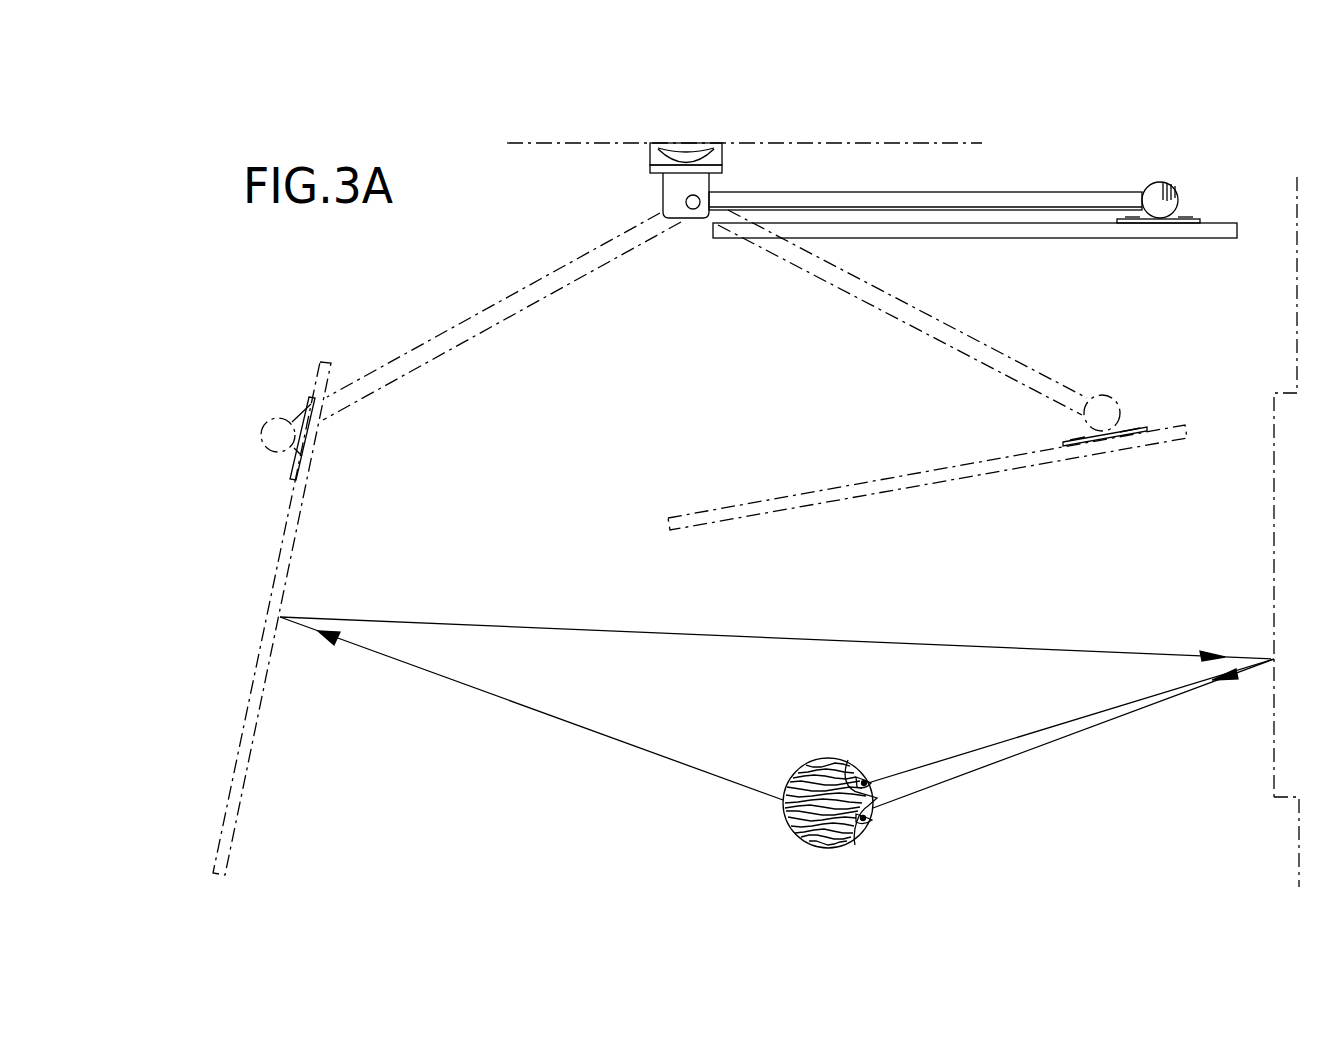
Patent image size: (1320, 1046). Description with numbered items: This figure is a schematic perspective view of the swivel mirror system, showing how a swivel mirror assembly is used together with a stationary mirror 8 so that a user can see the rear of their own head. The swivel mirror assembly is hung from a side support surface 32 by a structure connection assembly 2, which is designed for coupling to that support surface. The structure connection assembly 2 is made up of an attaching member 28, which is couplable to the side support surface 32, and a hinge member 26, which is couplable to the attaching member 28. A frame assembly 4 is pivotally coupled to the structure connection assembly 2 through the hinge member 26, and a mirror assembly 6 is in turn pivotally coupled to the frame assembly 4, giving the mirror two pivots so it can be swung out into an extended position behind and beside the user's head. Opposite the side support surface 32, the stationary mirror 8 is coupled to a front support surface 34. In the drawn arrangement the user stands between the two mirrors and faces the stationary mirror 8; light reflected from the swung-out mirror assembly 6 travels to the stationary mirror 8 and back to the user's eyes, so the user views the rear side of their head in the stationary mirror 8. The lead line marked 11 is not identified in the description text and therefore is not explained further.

The structure connection assembly 2 is at (683, 135).
The frame assembly 4 is at (1157, 185).
The mirror assembly 6 is at (1077, 240).
The stationary mirror 8 is at (1274, 797).
The viewer light path 11 is at (528, 781).
The hinge member 26 is at (697, 185).
The attaching member 28 is at (682, 157).
The side support surface 32 is at (903, 140).
The front support surface 34 is at (1299, 827).